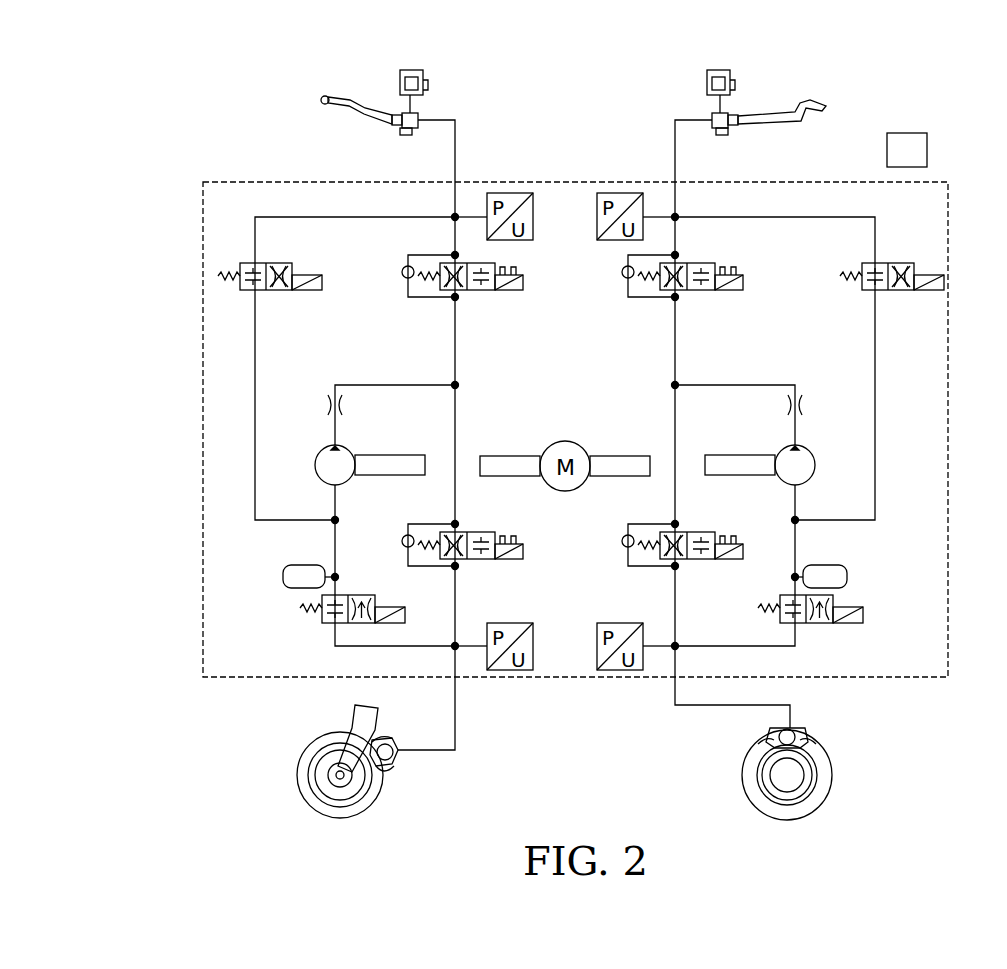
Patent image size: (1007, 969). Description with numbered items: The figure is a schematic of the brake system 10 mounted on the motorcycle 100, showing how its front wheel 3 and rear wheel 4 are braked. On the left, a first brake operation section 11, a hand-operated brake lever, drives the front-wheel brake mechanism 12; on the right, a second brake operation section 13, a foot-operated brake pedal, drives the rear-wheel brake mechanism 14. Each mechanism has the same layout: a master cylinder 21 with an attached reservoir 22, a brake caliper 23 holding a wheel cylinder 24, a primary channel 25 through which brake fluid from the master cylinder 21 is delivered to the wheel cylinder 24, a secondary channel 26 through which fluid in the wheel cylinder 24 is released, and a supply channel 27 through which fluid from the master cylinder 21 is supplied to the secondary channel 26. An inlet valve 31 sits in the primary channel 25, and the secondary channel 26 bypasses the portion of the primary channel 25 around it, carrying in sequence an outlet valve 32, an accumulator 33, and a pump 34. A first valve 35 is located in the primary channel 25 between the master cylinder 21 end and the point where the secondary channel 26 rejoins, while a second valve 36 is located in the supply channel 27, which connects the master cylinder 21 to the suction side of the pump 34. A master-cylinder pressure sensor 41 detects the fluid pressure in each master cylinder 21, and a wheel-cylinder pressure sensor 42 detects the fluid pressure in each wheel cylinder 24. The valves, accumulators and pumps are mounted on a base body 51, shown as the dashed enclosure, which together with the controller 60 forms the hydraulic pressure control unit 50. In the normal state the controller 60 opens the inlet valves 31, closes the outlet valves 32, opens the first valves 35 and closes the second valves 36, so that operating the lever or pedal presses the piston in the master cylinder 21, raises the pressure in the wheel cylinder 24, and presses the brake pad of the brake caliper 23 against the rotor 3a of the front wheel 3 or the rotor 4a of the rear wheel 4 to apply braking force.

The motorcycle 100 is at (136, 92).
The brake system 10 is at (290, 118).
The first brake operation section 11 is at (362, 104).
The front-wheel brake mechanism 12 is at (456, 103).
The second brake operation section 13 is at (811, 104).
The rear-wheel brake mechanism 14 is at (686, 100).
The master cylinder 21 is at (412, 135).
The reservoir 22 is at (412, 68).
The brake caliper 23 is at (388, 740).
The wheel cylinder 24 is at (402, 758).
The primary channel 25 is at (452, 327).
The secondary channel 26 is at (388, 385).
The supply channel 27 is at (372, 217).
The inlet valve 31 is at (486, 530).
The outlet valve 32 is at (355, 594).
The accumulator 33 is at (281, 577).
The pump 34 is at (352, 450).
The first valve 35 is at (510, 293).
The second valve 36 is at (290, 296).
The master-cylinder pressure sensor 41 is at (512, 192).
The wheel-cylinder pressure sensor 42 is at (510, 622).
The hydraulic pressure control unit 50 is at (862, 126).
The controller 60 is at (924, 102).
The base body 51 is at (234, 181).
The front wheel 3 is at (347, 770).
The rotor 3a is at (378, 792).
The rear wheel 4 is at (797, 783).
The rotor 4a is at (748, 796).